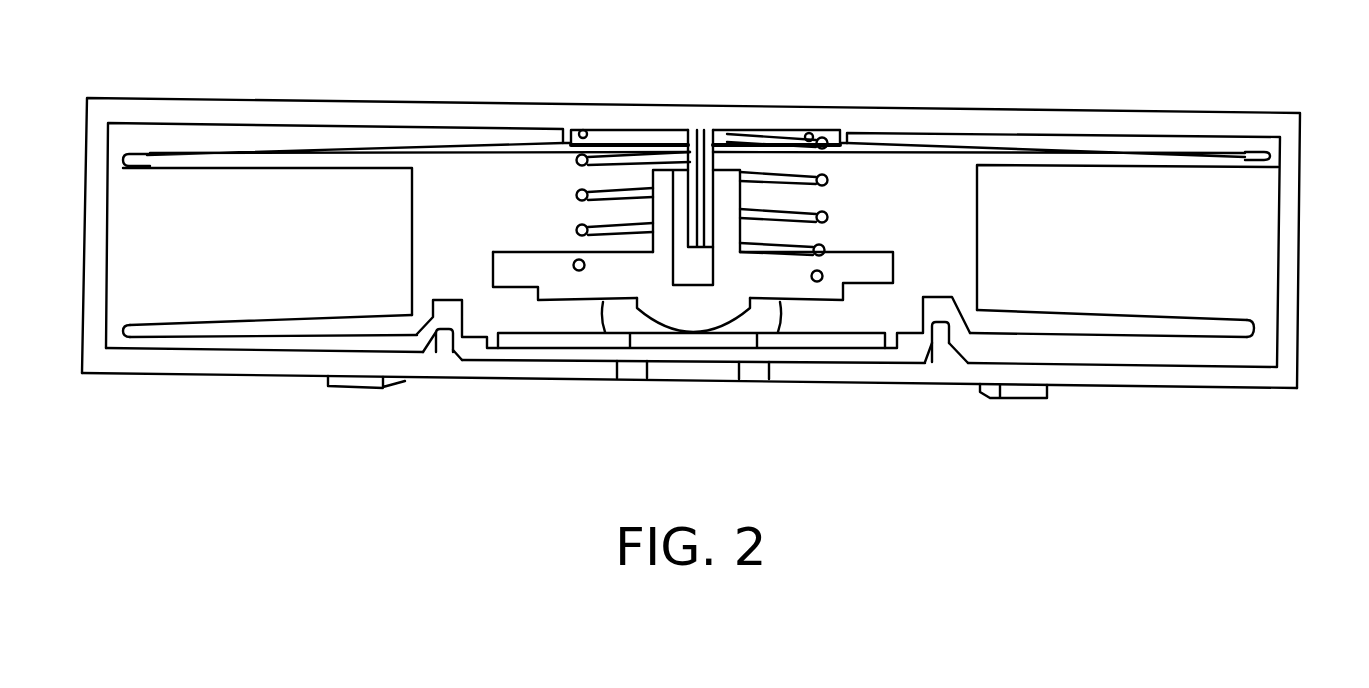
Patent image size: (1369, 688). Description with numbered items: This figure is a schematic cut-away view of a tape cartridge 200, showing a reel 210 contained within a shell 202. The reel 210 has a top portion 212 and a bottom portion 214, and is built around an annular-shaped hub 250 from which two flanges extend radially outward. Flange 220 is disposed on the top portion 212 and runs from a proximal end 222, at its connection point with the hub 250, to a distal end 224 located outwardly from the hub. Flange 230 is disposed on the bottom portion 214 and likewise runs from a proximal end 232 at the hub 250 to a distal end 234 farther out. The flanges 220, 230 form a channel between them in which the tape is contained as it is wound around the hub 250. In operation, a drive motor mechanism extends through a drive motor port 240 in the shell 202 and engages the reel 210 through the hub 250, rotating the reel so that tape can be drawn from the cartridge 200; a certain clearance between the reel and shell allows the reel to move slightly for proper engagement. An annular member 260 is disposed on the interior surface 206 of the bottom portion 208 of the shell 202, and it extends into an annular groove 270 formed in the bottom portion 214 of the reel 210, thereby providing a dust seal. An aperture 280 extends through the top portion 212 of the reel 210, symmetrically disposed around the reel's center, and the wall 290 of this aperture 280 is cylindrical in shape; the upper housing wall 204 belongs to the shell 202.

The tape cartridge 200 is at (847, 418).
The shell 202 is at (720, 103).
The housing upper wall 204 is at (121, 124).
The interior surface 206 is at (1247, 364).
The bottom portion 208 is at (203, 378).
The reel 210 is at (445, 150).
The top portion 212 is at (530, 150).
The bottom portion 214 is at (573, 318).
The flange 220 is at (258, 152).
The proximal end 222 is at (397, 166).
The distal end 224 is at (147, 152).
The flange 230 is at (262, 325).
The proximal end 232 is at (400, 323).
The distal end 234 is at (132, 338).
The drive motor port 240 is at (702, 365).
The hub 250 is at (958, 215).
The annular member 260 is at (447, 350).
The annular groove 270 is at (435, 294).
The aperture 280 is at (880, 140).
The wall 290 is at (848, 178).